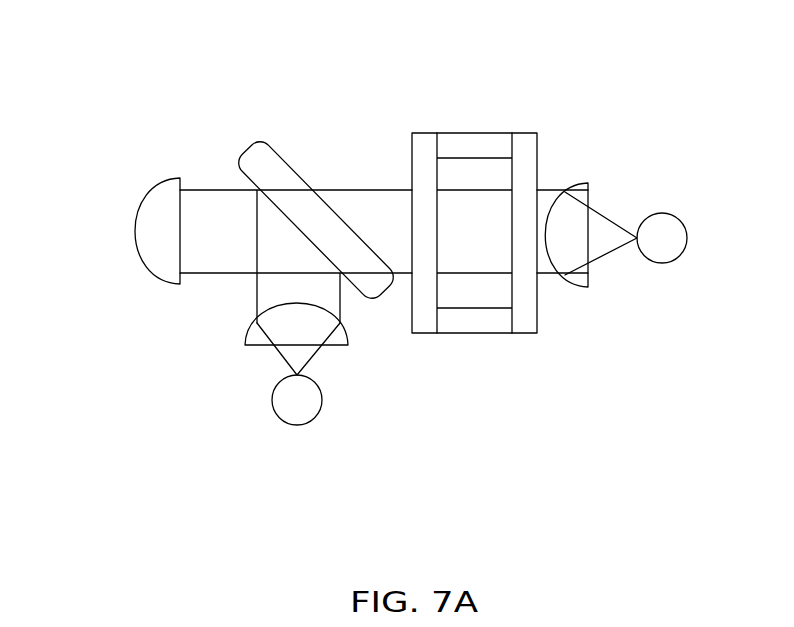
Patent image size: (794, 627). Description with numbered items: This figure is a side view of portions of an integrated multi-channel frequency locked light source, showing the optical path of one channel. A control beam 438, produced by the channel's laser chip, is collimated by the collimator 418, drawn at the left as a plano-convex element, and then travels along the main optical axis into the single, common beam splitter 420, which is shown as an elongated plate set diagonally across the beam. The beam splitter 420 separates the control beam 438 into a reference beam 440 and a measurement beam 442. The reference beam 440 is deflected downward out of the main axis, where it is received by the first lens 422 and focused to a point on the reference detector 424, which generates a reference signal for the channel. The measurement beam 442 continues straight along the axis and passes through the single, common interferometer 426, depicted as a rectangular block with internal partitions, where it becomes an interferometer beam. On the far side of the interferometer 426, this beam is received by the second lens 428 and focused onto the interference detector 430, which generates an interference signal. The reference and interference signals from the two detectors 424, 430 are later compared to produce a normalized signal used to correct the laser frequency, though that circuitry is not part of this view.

The collimator 418 is at (137, 230).
The beam splitter 420 is at (248, 140).
The first lens 422 is at (245, 342).
The reference detector 424 is at (272, 400).
The interferometer 426 is at (472, 334).
The second lens 428 is at (583, 288).
The interference detector 430 is at (658, 263).
The control beam 438 is at (209, 170).
The reference beam 440 is at (240, 298).
The measurement beam 442 is at (375, 173).